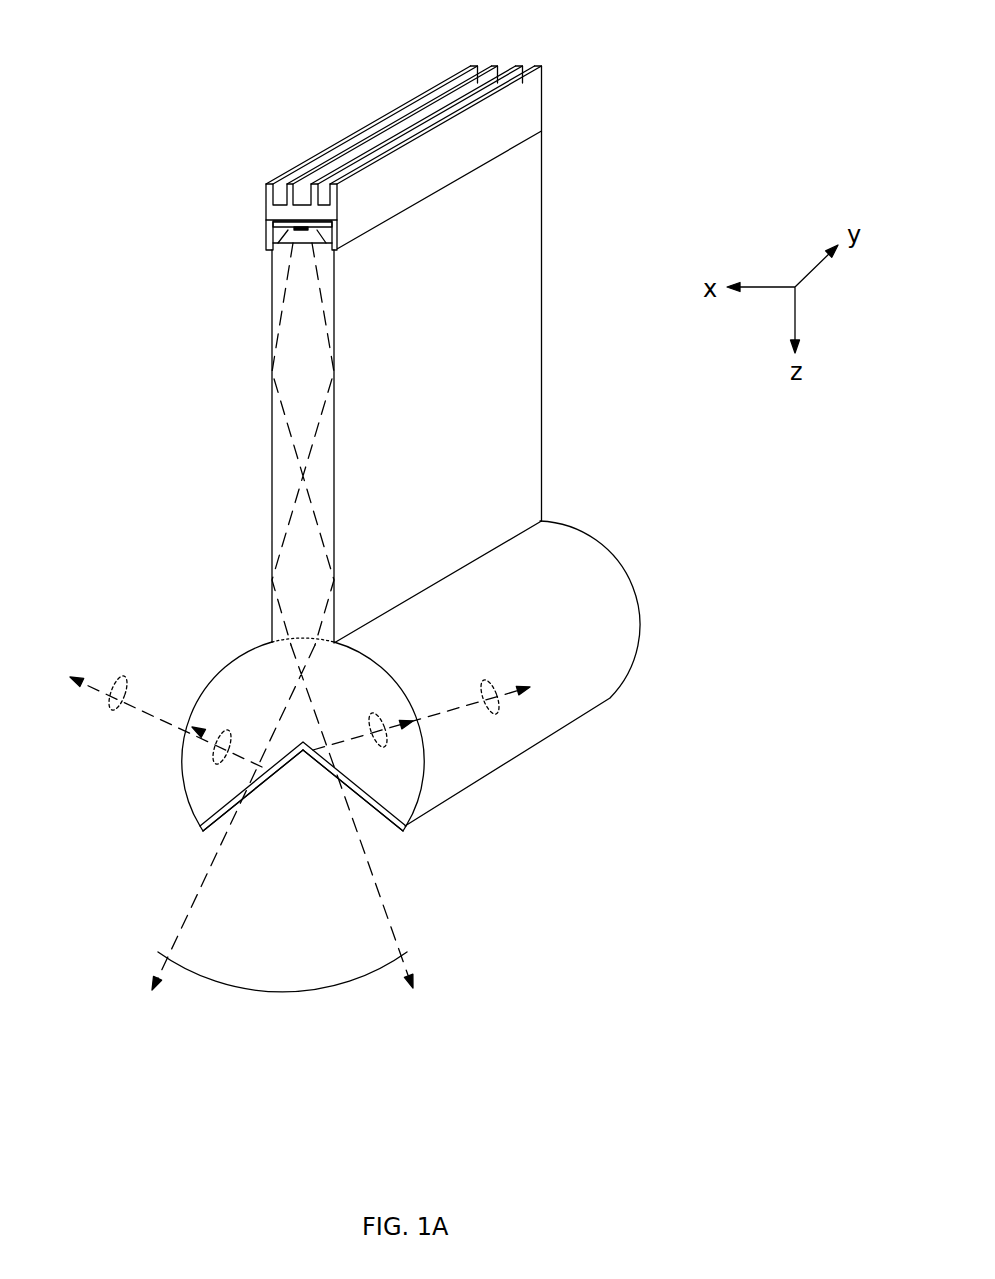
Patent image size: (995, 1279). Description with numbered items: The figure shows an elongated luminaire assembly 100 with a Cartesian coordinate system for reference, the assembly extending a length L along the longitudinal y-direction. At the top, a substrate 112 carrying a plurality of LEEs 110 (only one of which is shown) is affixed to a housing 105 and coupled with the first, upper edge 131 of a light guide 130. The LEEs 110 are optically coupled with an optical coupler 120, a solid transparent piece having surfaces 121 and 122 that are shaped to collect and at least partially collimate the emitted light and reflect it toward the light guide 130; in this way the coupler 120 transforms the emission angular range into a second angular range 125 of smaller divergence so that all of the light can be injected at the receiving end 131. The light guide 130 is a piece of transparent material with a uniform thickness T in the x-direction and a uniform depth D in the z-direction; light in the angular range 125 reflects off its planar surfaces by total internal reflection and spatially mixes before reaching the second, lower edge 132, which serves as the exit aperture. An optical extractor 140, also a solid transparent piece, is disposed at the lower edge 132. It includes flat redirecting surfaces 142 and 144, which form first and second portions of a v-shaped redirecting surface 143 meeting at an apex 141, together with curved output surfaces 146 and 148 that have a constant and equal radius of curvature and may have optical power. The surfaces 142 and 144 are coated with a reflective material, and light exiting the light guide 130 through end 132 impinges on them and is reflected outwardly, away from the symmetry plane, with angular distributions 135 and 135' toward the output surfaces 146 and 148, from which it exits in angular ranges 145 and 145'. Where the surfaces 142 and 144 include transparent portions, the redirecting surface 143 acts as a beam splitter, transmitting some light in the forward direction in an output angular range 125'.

The luminaire assembly 100 is at (148, 47).
The housing 105 is at (545, 92).
The LEEs 110 is at (307, 185).
The substrate 112 is at (310, 221).
The optical coupler 120 is at (273, 222).
The surface of optical coupler 121 is at (330, 237).
The surface of optical coupler 122 is at (300, 237).
The second angular range 125 is at (351, 444).
The output angular range 125' is at (282, 853).
The light guide 130 is at (525, 218).
The first edge of light guide 131 is at (290, 243).
The second edge of light guide 132 is at (272, 648).
The angular distribution 135 is at (416, 682).
The angular distribution 135' is at (162, 724).
The optical extractor 140 is at (608, 608).
The apex 141 is at (306, 752).
The redirecting surface 142 is at (380, 810).
The redirecting surface 143 is at (333, 822).
The redirecting surface 144 is at (200, 828).
The angular range 145 is at (523, 673).
The angular range 145' is at (93, 667).
The output surface 146 is at (427, 777).
The output surface 148 is at (182, 788).
The thickness T is at (346, 354).
The depth D is at (491, 538).
The length L is at (347, 506).